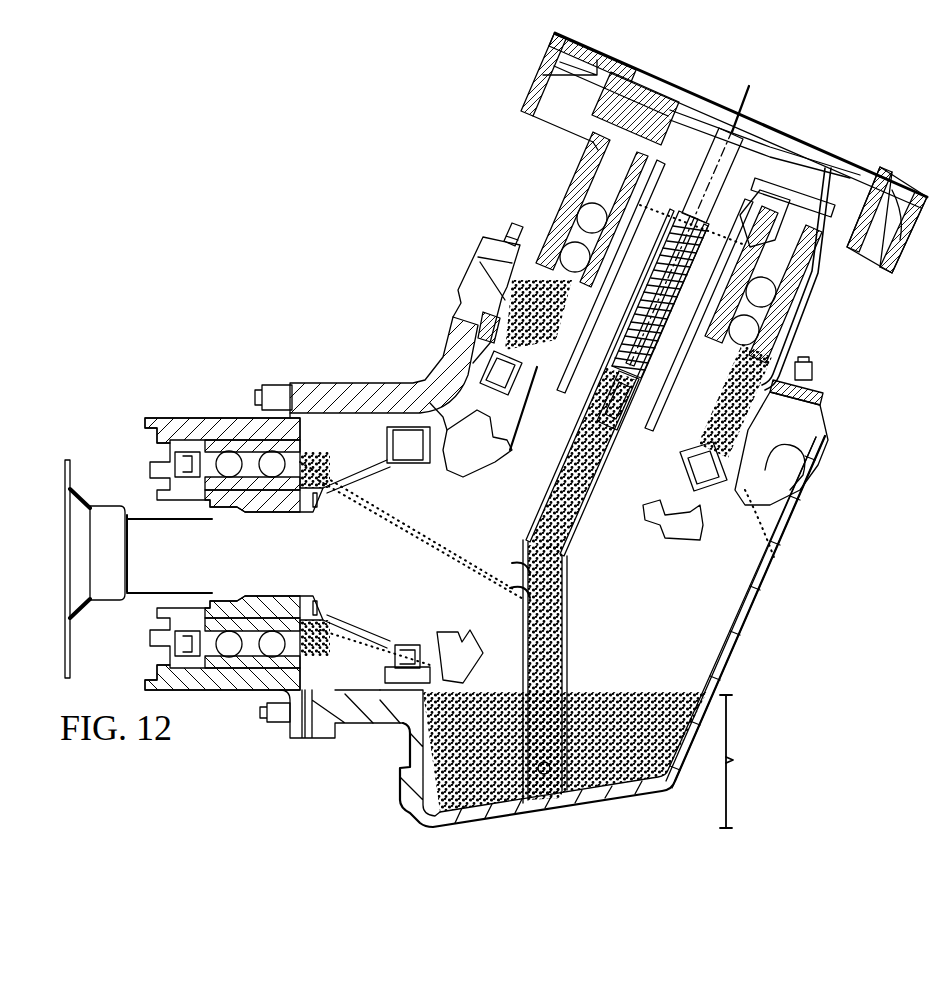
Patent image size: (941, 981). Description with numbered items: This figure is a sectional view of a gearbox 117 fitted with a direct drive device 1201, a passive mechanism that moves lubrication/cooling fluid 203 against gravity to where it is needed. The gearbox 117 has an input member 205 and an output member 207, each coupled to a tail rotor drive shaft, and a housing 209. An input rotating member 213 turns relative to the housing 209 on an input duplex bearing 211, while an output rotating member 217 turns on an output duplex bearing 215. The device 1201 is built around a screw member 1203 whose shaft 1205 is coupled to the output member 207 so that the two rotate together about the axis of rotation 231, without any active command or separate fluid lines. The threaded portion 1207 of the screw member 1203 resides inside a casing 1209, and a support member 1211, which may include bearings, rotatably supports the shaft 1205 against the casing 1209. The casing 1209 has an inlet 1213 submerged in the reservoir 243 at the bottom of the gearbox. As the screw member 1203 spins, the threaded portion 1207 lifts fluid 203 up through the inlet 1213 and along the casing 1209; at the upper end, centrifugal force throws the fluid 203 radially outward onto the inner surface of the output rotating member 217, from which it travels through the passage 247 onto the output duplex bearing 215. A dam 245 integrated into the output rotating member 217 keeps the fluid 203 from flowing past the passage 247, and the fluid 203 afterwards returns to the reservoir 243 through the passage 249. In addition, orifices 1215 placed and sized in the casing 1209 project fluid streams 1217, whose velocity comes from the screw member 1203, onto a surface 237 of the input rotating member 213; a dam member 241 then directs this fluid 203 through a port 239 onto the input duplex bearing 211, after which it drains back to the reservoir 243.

The gearbox 117 is at (352, 253).
The fluid 203 is at (672, 697).
The input member 205 is at (63, 643).
The output member 207 is at (882, 190).
The housing 209 is at (810, 445).
The input duplex bearing 211 is at (208, 468).
The input rotating member 213 is at (277, 602).
The output duplex bearing 215 is at (580, 250).
The output rotating member 217 is at (817, 292).
The axis of rotation 231 is at (749, 86).
The surface 237 is at (327, 493).
The port 239 is at (373, 445).
The dam member 241 is at (400, 487).
The reservoir 243 is at (751, 761).
The dam 245 is at (738, 240).
The passage 247 is at (643, 205).
The passage 249 is at (763, 487).
The direct drive device 1201 is at (585, 633).
The screw member 1203 is at (680, 322).
The shaft 1205 is at (700, 153).
The threaded portion 1207 is at (633, 305).
The casing 1209 is at (570, 610).
The support member 1211 is at (637, 417).
The inlet 1213 is at (567, 770).
The orifices 1215 is at (523, 590).
The fluid streams 1217 is at (400, 527).